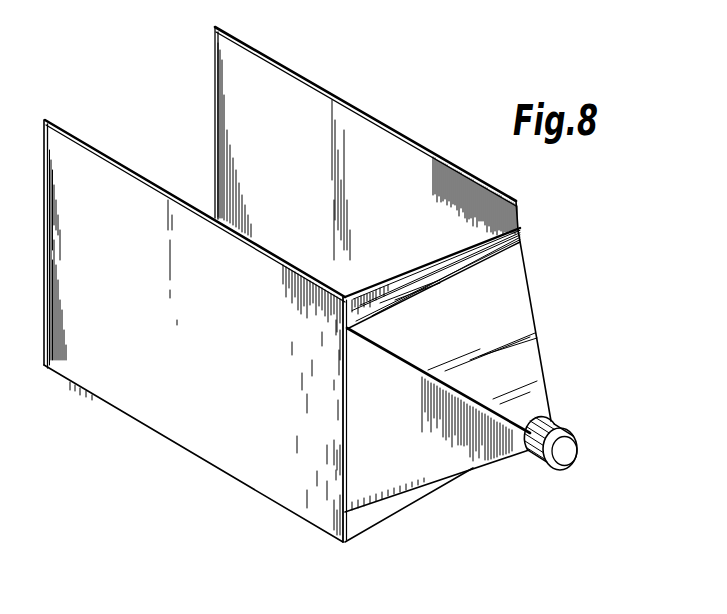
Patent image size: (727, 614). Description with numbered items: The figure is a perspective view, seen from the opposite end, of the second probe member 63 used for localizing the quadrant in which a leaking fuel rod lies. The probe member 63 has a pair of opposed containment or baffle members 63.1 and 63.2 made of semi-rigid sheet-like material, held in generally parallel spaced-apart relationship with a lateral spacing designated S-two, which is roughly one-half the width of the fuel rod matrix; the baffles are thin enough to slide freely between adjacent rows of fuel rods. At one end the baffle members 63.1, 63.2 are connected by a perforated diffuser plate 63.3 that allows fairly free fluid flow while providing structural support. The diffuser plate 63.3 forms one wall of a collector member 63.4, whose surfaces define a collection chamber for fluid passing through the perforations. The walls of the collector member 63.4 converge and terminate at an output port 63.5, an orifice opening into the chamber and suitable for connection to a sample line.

The probe member 63 is at (424, 137).
The baffle member 63.1 is at (157, 312).
The baffle member 63.2 is at (308, 150).
The diffuser plate 63.3 is at (503, 226).
The collector member 63.4 is at (522, 357).
The output port 63.5 is at (567, 436).